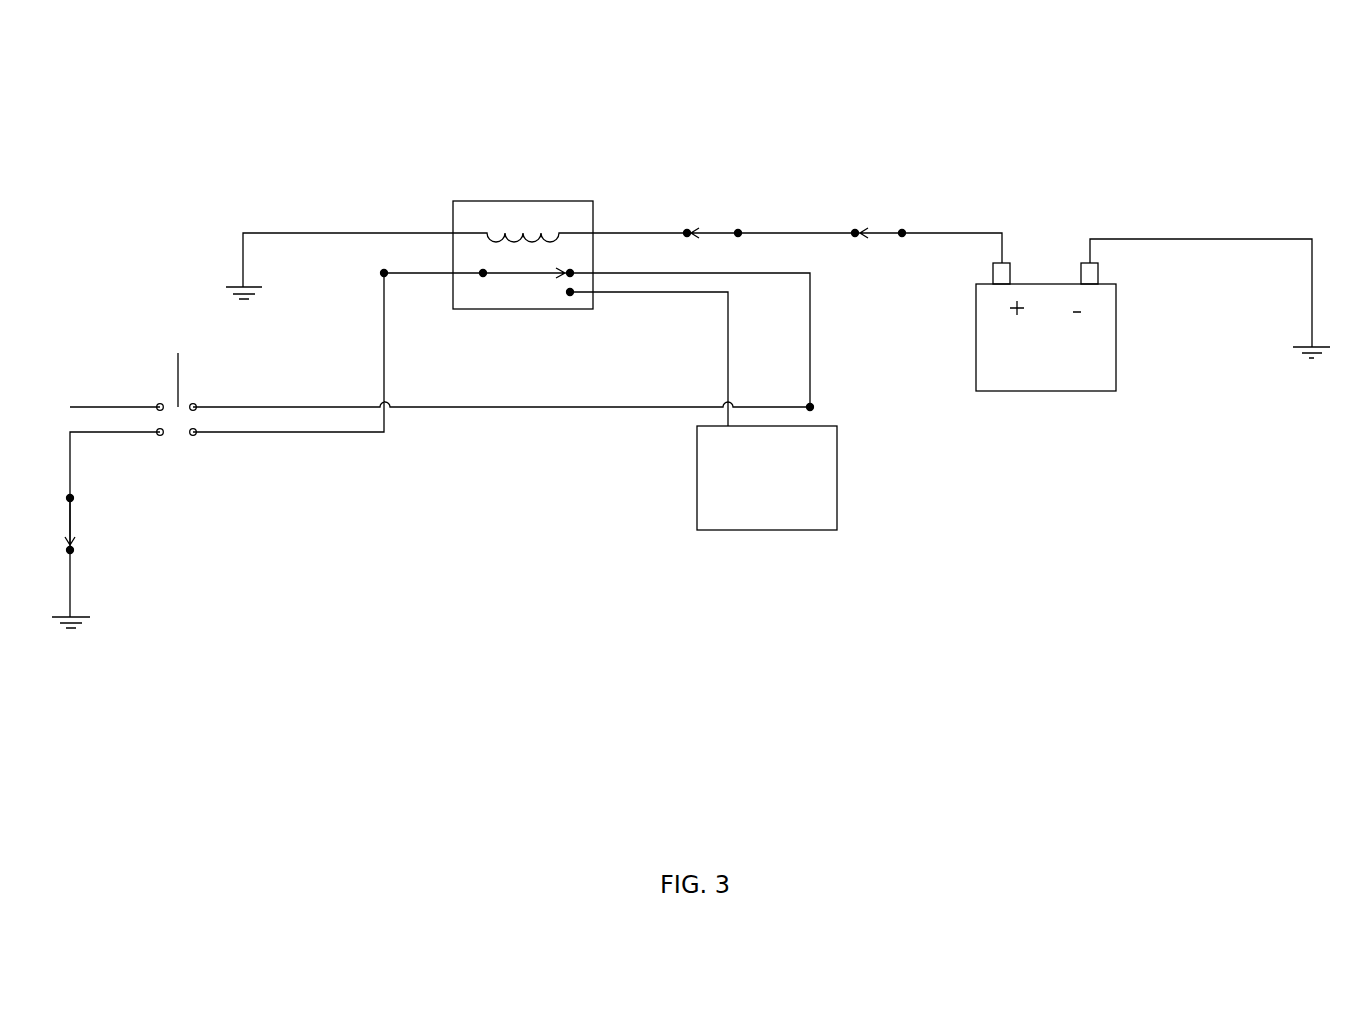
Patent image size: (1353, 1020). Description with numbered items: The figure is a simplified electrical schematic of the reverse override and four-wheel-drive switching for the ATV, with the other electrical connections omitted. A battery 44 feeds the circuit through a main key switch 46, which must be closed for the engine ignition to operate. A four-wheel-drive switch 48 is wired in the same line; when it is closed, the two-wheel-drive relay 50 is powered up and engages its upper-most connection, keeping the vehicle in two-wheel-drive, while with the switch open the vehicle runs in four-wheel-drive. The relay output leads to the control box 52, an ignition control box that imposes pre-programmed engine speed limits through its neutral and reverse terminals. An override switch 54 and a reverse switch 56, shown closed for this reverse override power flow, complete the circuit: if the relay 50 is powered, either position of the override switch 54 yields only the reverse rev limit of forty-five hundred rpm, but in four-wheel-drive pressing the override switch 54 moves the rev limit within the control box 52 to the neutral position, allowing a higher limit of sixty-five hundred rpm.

The battery 44 is at (1070, 400).
The main key switch 46 is at (880, 228).
The four-wheel-drive switch 48 is at (703, 227).
The two-wheel-drive relay 50 is at (507, 199).
The control box 52 is at (845, 483).
The override switch 54 is at (185, 385).
The reverse switch 56 is at (83, 525).